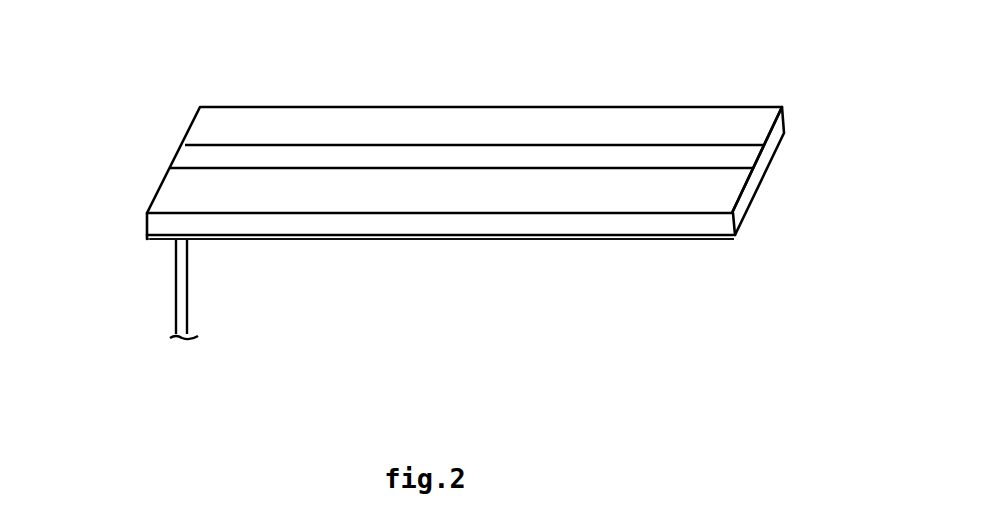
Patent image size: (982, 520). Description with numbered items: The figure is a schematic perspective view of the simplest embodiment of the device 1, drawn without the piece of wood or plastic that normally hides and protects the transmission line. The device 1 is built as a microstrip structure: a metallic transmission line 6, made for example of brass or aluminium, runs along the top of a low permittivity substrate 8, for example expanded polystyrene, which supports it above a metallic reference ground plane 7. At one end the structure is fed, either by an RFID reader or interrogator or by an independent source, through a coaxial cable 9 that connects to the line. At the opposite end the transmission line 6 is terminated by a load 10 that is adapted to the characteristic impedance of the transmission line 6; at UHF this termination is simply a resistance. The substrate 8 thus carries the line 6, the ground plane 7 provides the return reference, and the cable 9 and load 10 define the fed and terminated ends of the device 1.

The device 1 is at (735, 225).
The transmission line 6 is at (243, 155).
The reference ground plane 7 is at (283, 239).
The low permittivity substrate 8 is at (362, 133).
The coaxial cable 9 is at (176, 307).
The load 10 is at (765, 155).